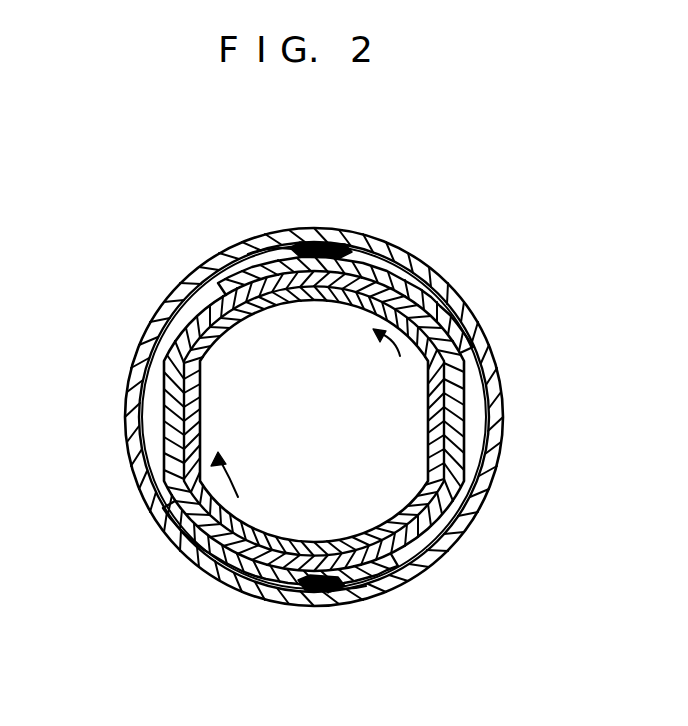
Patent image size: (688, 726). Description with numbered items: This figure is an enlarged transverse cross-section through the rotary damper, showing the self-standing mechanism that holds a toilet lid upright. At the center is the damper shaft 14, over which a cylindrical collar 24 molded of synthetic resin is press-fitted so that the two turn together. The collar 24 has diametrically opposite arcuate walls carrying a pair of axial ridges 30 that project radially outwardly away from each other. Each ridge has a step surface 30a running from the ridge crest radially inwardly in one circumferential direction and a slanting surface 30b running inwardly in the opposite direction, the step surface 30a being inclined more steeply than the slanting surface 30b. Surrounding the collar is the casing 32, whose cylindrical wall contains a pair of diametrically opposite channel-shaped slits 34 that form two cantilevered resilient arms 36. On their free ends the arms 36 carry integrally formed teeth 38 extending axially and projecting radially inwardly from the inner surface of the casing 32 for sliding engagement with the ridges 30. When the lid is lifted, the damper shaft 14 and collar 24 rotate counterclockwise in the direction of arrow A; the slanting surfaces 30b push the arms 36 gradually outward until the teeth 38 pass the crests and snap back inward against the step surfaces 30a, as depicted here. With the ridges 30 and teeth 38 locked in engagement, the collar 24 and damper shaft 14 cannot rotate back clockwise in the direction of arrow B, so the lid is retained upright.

The damper shaft 14 is at (267, 547).
The cylindrical collar 24 is at (168, 407).
The axial ridges 30 is at (298, 290).
The step surface 30a is at (327, 236).
The slanting surface 30b is at (247, 243).
The casing 32 is at (492, 322).
The channel-shaped slits 34 is at (342, 238).
The cantilevered resilient arms 36 is at (298, 232).
The teeth 38 is at (390, 246).
The arrow A is at (443, 283).
The arrow B is at (170, 540).